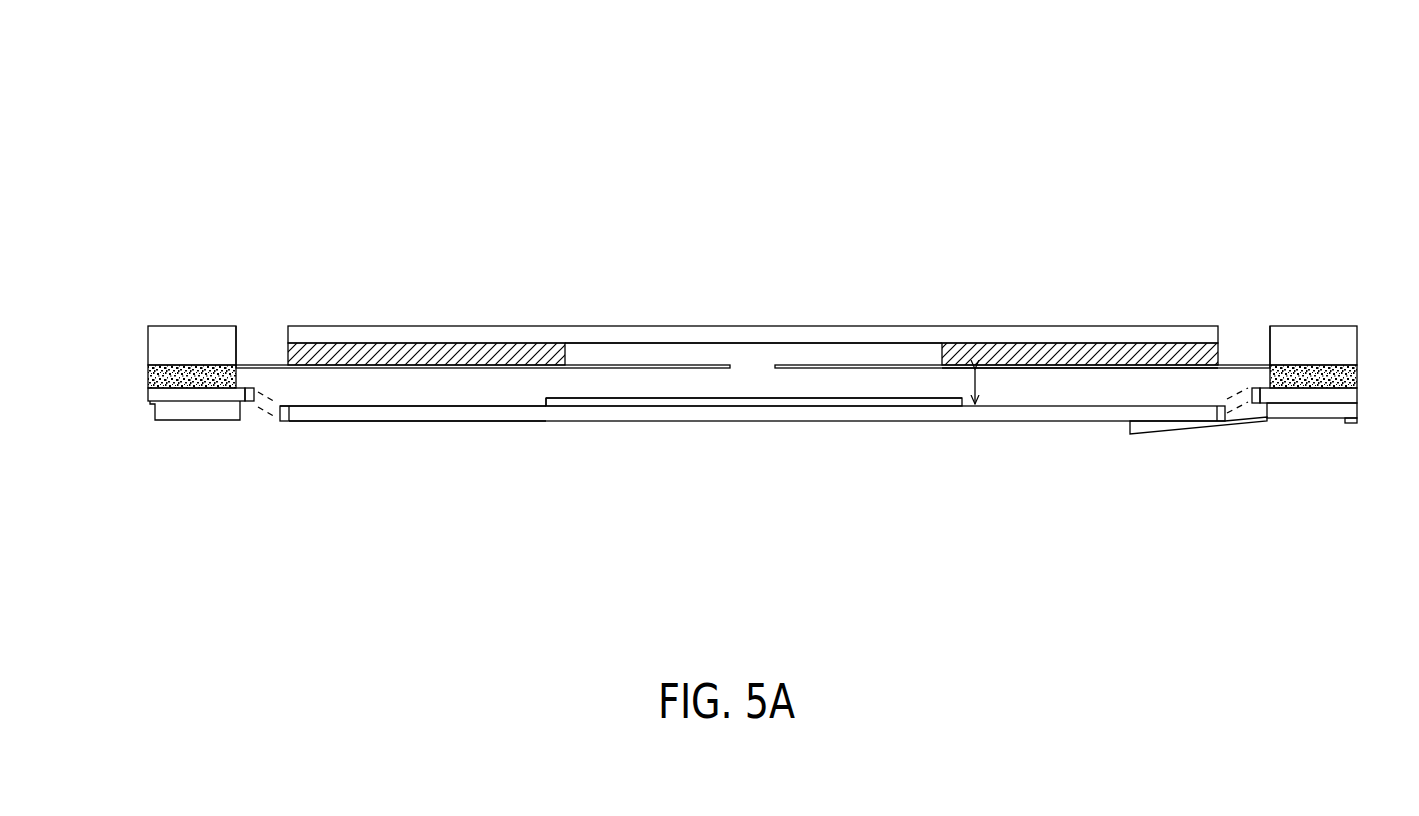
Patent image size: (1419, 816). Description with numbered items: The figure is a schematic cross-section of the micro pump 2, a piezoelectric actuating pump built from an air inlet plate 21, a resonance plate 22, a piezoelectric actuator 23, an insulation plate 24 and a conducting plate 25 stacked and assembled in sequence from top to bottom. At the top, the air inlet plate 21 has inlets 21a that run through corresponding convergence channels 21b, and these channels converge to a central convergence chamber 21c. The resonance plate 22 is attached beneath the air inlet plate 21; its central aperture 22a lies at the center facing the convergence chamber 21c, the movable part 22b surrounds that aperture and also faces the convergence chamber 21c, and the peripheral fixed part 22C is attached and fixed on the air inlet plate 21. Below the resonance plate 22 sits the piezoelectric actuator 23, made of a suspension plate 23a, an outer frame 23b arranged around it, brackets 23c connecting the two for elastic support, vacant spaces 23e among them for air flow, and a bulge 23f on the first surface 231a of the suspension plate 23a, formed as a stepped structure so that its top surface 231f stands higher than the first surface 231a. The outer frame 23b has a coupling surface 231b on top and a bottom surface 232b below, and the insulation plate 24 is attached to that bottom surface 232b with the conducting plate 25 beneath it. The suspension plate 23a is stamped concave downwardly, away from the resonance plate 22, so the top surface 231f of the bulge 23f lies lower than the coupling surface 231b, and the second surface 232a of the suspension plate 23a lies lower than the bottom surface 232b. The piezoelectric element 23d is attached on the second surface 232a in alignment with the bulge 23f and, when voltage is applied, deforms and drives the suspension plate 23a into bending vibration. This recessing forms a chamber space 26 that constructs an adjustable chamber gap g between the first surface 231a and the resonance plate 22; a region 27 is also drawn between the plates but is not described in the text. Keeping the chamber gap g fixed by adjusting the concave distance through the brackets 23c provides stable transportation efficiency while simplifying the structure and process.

The micro pump 2 is at (1359, 163).
The air inlet plate 21 is at (1311, 344).
The inlet 21a is at (264, 324).
The convergence channel 21b is at (423, 345).
The convergence chamber 21c is at (664, 353).
The resonance plate 22 is at (824, 279).
The central aperture 22a is at (760, 364).
The movable part 22b is at (880, 364).
The fixed part 22C is at (1080, 317).
The piezoelectric actuator 23 is at (1344, 397).
The suspension plate 23a is at (376, 413).
The outer frame 23b is at (173, 394).
The bracket 23c is at (250, 403).
The piezoelectric element 23d is at (464, 423).
The vacant space 23e is at (277, 418).
The bulge 23f is at (556, 404).
The insulation plate 24 is at (1333, 409).
The conducting plate 25 is at (1357, 421).
The chamber space 26 is at (1072, 388).
The gap space 27 is at (465, 381).
The first surface 231a is at (988, 408).
The coupling surface 231b is at (148, 384).
The top surface 231f is at (597, 397).
The second surface 232a is at (745, 422).
The bottom surface 232b is at (150, 404).
The chamber gap g is at (987, 382).